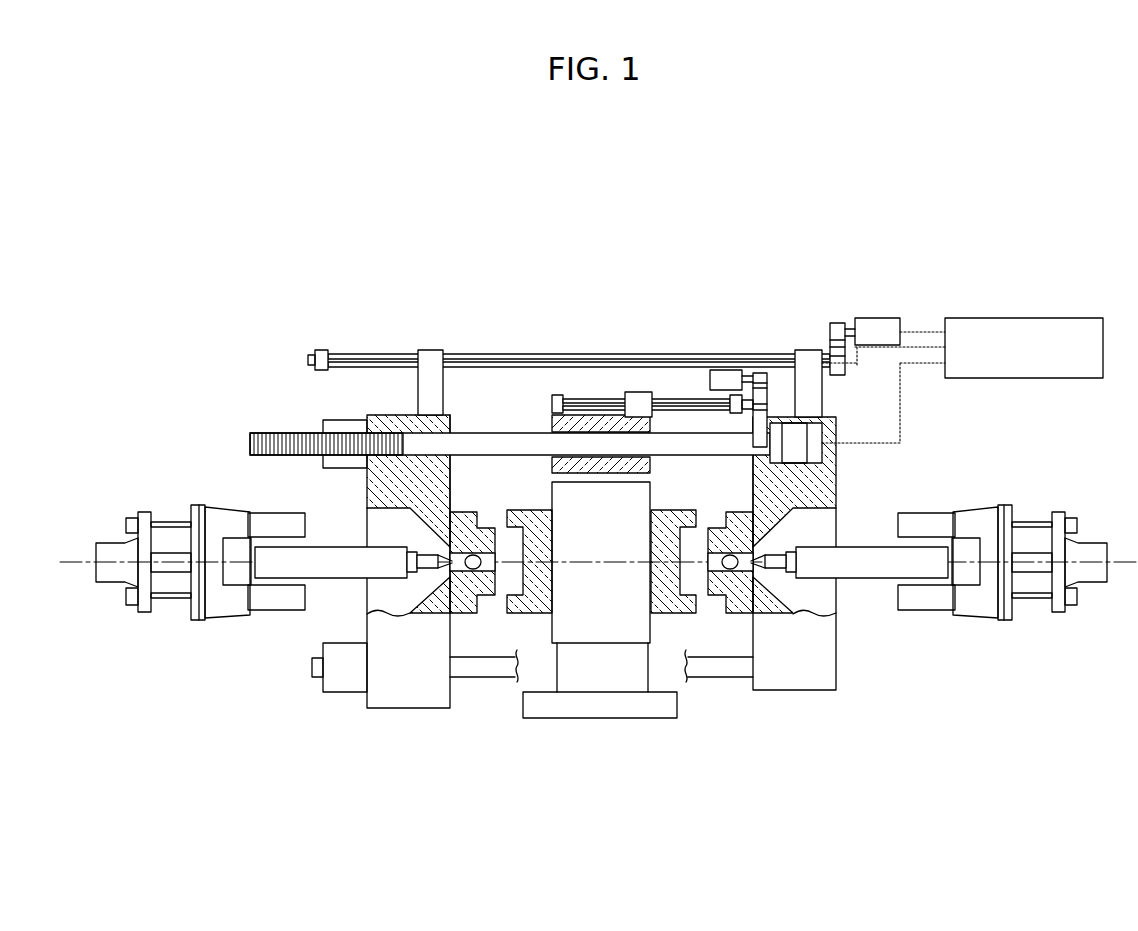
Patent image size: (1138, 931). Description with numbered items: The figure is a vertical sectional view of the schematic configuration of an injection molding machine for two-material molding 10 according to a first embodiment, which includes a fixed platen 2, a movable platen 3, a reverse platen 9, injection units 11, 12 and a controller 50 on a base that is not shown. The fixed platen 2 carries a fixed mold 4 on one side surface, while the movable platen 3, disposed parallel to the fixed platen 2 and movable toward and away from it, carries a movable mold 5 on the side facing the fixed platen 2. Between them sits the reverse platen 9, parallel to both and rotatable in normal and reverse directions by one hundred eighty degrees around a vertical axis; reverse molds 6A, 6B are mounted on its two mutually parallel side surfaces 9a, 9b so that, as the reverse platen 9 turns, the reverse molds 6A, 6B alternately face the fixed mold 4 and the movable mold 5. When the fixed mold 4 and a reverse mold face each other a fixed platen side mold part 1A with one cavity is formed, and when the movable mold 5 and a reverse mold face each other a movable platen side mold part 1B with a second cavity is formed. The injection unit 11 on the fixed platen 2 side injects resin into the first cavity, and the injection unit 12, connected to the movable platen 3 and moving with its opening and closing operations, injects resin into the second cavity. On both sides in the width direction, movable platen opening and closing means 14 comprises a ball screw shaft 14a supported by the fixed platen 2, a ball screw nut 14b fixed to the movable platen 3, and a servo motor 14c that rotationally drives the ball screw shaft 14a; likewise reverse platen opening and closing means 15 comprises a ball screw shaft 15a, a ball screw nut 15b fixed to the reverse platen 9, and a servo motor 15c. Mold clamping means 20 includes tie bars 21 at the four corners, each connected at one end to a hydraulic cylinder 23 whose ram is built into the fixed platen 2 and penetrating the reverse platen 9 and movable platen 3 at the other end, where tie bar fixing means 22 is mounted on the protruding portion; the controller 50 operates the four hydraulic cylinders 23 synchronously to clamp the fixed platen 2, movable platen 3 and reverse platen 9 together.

The fixed platen side mold part 1A is at (716, 628).
The movable platen side mold part 1B is at (490, 628).
The fixed platen 2 is at (838, 480).
The movable platen 3 is at (366, 488).
The fixed mold 4 is at (739, 614).
The movable mold 5 is at (467, 614).
The reverse mold 6A is at (692, 614).
The reverse mold 6B is at (513, 614).
The reverse platen 9 is at (652, 495).
The side surface 9a is at (652, 615).
The side surface 9b is at (548, 615).
The injection molding machine for two-material molding 10 is at (778, 276).
The injection unit 11 is at (864, 580).
The injection unit 12 is at (333, 580).
The movable platen opening and closing means 14 is at (839, 300).
The ball screw shaft 14a is at (551, 354).
The ball screw nut 14b is at (433, 350).
The servo motor 14c is at (878, 318).
The reverse platen opening and closing means 15 is at (706, 372).
The ball screw shaft 15a is at (686, 380).
The ball screw nut 15b is at (633, 392).
The servo motor 15c is at (735, 368).
The mold clamping means 20 is at (826, 438).
The tie bar 21 is at (498, 433).
The tie bar fixing means 22 is at (345, 418).
The hydraulic cylinder 23 is at (790, 425).
The controller 50 is at (1030, 318).